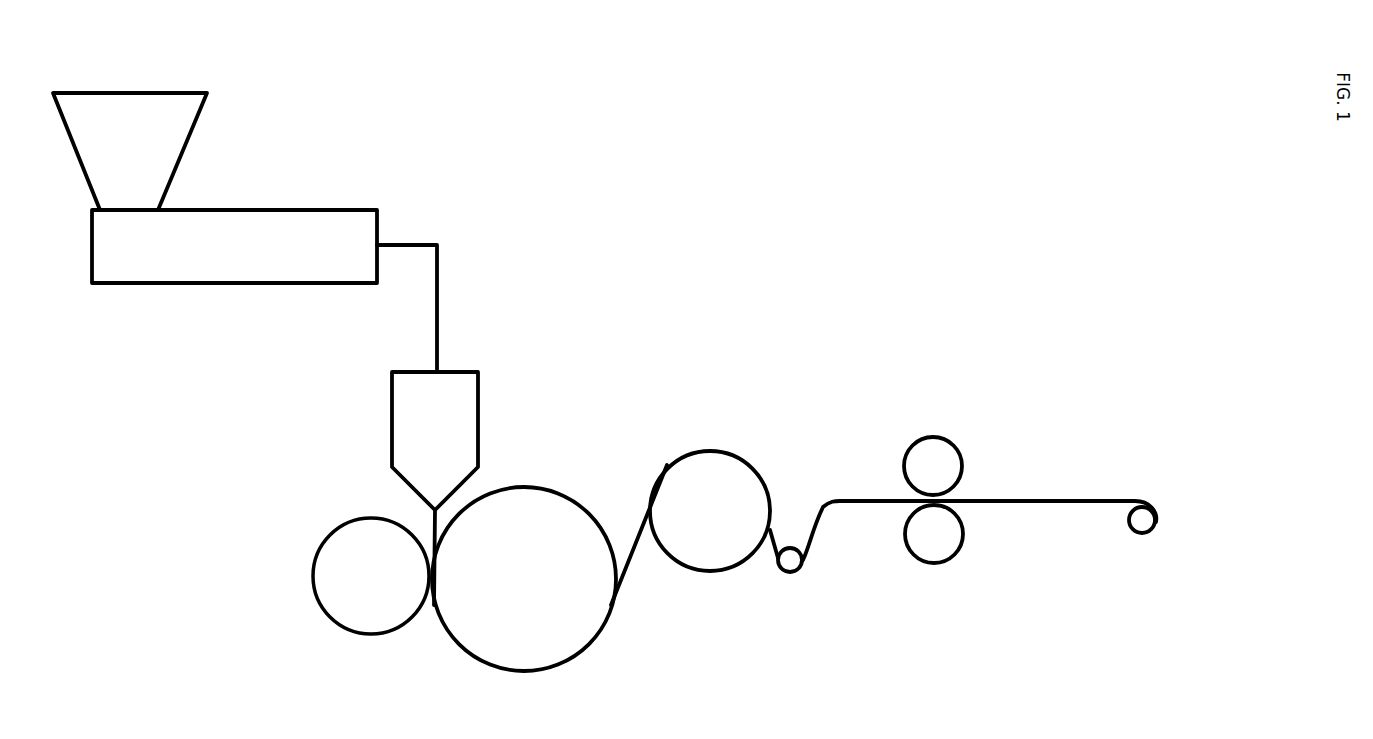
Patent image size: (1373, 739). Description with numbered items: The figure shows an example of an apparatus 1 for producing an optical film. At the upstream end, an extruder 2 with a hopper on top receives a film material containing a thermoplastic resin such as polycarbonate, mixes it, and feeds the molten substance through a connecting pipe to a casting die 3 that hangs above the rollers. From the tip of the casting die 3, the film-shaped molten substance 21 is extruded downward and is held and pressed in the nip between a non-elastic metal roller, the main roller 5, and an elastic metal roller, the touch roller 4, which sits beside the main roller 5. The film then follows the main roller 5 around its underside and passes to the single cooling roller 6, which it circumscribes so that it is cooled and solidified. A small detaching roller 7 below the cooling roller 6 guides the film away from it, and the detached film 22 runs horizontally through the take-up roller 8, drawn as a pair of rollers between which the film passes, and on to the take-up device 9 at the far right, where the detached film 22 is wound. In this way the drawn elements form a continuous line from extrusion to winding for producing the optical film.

The apparatus for producing an optical film 1 is at (655, 242).
The extruder 2 is at (236, 210).
The casting die 3 is at (478, 372).
The film-shaped molten substance 21 is at (430, 543).
The touch roller 4 is at (312, 578).
The main roller 5 is at (528, 486).
The cooling roller 6 is at (706, 451).
The detaching roller 7 is at (797, 573).
The detached film 22 is at (848, 498).
The take-up roller 8 is at (947, 445).
The take-up device 9 is at (1158, 518).